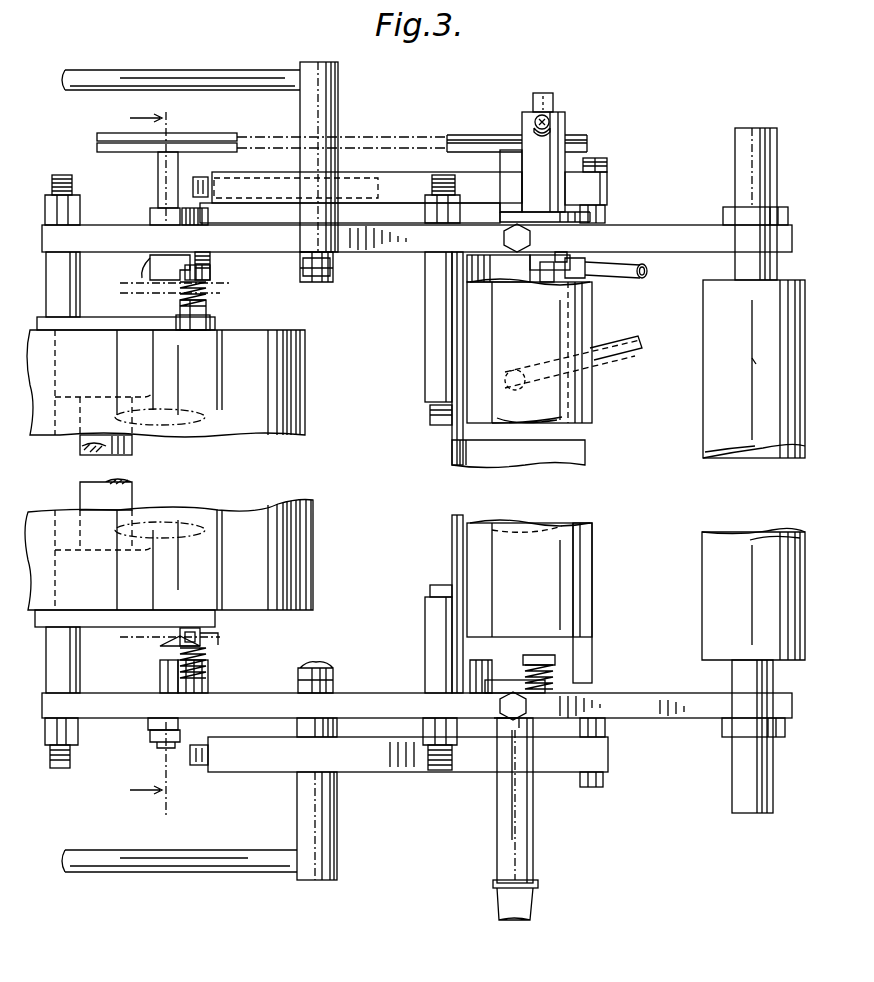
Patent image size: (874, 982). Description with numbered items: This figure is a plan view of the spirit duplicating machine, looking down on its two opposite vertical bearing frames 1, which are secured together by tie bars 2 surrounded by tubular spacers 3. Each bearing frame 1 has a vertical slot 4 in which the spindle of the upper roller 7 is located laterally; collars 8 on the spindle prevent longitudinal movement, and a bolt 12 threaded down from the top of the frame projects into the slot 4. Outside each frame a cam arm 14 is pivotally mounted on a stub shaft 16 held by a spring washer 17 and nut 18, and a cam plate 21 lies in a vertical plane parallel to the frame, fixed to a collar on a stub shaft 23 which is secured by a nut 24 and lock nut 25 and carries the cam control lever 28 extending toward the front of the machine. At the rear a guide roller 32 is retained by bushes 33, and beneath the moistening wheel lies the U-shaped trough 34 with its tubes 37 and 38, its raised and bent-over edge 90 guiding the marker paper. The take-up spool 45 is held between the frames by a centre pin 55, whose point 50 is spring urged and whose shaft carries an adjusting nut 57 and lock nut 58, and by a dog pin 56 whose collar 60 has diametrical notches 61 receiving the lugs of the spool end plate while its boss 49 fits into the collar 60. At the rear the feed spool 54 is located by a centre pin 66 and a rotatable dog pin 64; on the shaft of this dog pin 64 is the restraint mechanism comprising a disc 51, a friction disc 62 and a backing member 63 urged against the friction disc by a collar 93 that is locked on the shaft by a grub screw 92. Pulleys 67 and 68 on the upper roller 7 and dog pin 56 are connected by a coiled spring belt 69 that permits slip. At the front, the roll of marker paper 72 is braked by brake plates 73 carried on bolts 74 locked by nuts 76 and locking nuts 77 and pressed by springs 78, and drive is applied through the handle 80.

The bearing frame 1 is at (276, 247).
The tie bar 2 is at (62, 180).
The tubular spacer 3 is at (68, 277).
The vertical slot 4 is at (139, 459).
The upper roller 7 is at (489, 345).
The collar 8 is at (492, 275).
The bolt 12 is at (530, 238).
The cam arm 14 is at (385, 178).
The stub shaft 16 is at (605, 214).
The spring washer 17 is at (614, 275).
The nut 18 is at (587, 270).
The cam plate 21 is at (210, 178).
The stub shaft 23 is at (338, 118).
The nut 24 is at (315, 282).
The lock nut 25 is at (328, 282).
The cam control lever 28 is at (290, 92).
The guide roller 32 is at (710, 300).
The bush 33 is at (723, 214).
The trough 34 is at (452, 450).
The tube 37 is at (642, 278).
The tube 38 is at (605, 352).
The take-up spool 45 is at (212, 624).
The boss 49 is at (150, 642).
The point 50 is at (160, 668).
The disc 51 is at (607, 202).
The feed spool 54 is at (580, 622).
The centre pin 55 is at (172, 694).
The dog pin 56 is at (145, 262).
The adjusting nut 57 is at (150, 730).
The lock nut 58 is at (160, 748).
The collar 60 is at (168, 262).
The notch 61 is at (196, 262).
The friction disc 62 is at (600, 172).
The backing member 63 is at (542, 140).
The dog pin 64 is at (532, 266).
The centre pin 66 is at (577, 676).
The pulley 67 is at (505, 135).
The pulley 68 is at (202, 133).
The spring belt 69 is at (247, 133).
The roll of marker paper 72 is at (273, 330).
The brake plate 73 is at (180, 310).
The bolt 74 is at (210, 294).
The nut 76 is at (212, 262).
The locking nut 77 is at (212, 274).
The spring 78 is at (212, 318).
The handle 80 is at (497, 885).
The edge of trough 90 is at (448, 501).
The grub screw 92 is at (549, 118).
The collar 93 is at (550, 126).